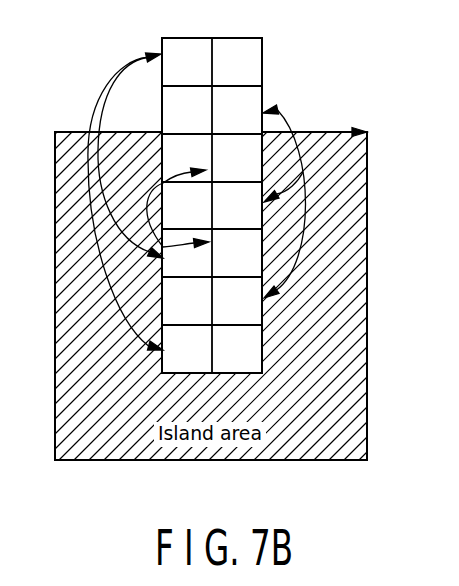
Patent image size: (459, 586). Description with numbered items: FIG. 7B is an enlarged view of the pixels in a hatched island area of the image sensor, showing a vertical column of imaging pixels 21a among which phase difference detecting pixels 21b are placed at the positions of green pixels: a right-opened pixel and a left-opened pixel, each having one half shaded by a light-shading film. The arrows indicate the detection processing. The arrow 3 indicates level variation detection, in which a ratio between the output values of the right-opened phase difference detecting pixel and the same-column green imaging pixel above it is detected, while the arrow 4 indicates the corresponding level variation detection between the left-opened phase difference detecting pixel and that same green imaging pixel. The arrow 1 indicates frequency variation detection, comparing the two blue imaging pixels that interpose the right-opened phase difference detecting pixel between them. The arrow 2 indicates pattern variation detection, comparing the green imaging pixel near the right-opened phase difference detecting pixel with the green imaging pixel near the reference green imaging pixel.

The arrow 1 is at (146, 225).
The arrow 2 is at (117, 77).
The arrow 3 is at (278, 113).
The arrow 4 is at (304, 222).
The imaging pixel 21a is at (253, 64).
The phase difference detecting pixel 21b is at (253, 194).